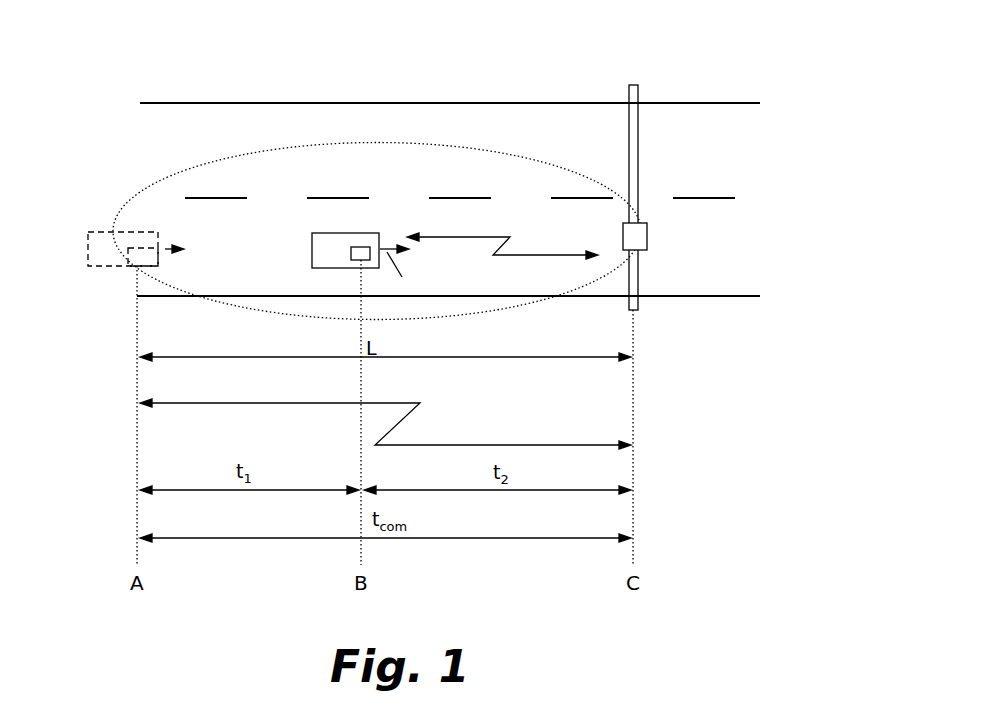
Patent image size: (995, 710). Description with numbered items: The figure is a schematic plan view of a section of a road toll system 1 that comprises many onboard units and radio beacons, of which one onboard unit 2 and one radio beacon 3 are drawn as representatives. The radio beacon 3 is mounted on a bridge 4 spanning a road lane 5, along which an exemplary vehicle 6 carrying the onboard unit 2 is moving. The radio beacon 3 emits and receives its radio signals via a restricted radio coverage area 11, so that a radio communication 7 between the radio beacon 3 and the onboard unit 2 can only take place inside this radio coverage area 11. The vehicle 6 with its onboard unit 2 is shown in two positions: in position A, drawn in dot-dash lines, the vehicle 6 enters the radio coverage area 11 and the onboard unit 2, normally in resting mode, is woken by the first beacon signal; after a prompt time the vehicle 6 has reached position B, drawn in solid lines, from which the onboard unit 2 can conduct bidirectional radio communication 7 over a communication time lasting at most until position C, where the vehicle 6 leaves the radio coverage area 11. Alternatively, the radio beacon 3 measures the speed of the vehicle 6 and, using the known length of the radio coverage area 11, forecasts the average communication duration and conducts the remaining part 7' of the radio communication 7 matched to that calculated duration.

The road toll system 1 is at (70, 48).
The onboard unit 2 is at (145, 250).
The radio beacon 3 is at (638, 238).
The bridge 4 is at (636, 100).
The road lane 5 is at (175, 102).
The vehicle 6 is at (100, 236).
The radio communication 7 is at (385, 411).
The remaining part of the radio communication 7' is at (502, 221).
The radio coverage area 11 is at (445, 140).